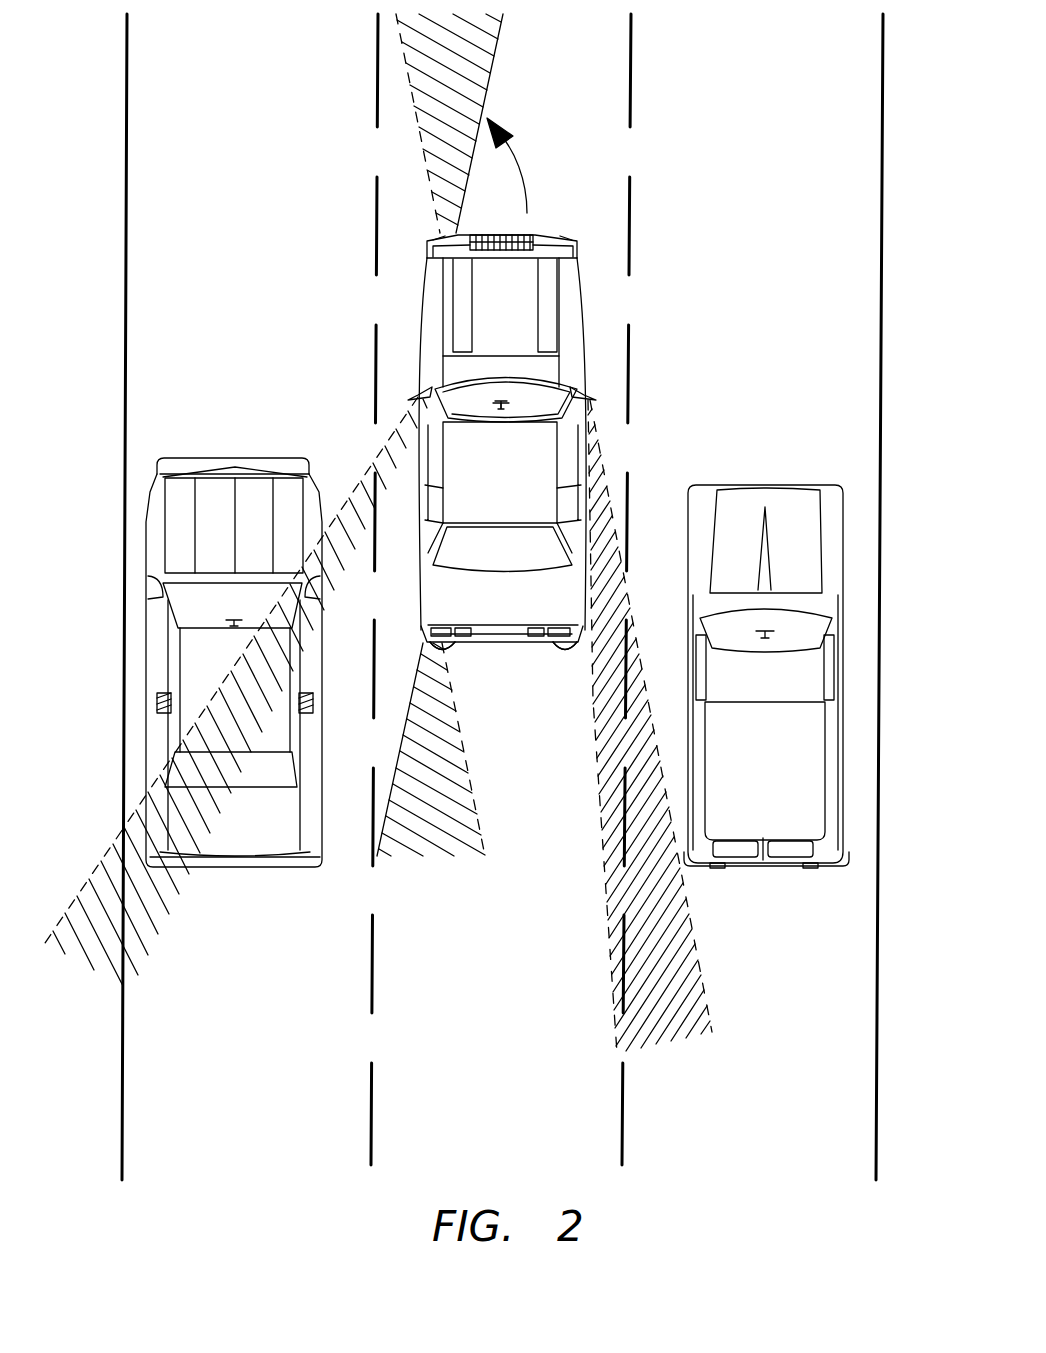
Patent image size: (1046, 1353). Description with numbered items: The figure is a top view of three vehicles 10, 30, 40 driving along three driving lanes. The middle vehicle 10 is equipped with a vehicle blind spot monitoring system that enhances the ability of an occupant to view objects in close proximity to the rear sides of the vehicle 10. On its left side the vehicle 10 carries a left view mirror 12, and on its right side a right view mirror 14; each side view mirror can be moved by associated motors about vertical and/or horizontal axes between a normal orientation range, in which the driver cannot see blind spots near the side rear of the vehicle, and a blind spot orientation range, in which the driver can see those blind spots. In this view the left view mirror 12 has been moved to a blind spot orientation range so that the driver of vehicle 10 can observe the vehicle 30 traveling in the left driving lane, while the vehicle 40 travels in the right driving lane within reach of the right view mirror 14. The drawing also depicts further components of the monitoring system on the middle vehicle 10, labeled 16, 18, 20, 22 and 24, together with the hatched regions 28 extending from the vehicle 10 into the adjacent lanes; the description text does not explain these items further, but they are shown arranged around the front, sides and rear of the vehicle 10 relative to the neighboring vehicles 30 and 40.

The middle vehicle 10 is at (422, 300).
The left view mirror 12 is at (428, 390).
The right view mirror 14 is at (585, 395).
The rear view mirror sensor 16 is at (503, 405).
The front left corner sensor 18 is at (440, 233).
The front right corner sensor 20 is at (558, 235).
The rear left corner sensor 22 is at (448, 650).
The rear right corner sensor 24 is at (567, 648).
The detection zone 28 is at (490, 83).
The vehicle in the left driving lane 30 is at (219, 487).
The vehicle in the right driving lane 40 is at (775, 493).